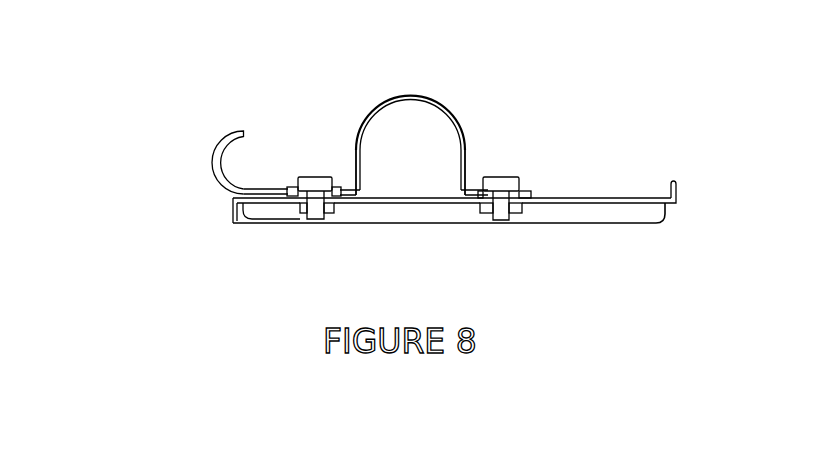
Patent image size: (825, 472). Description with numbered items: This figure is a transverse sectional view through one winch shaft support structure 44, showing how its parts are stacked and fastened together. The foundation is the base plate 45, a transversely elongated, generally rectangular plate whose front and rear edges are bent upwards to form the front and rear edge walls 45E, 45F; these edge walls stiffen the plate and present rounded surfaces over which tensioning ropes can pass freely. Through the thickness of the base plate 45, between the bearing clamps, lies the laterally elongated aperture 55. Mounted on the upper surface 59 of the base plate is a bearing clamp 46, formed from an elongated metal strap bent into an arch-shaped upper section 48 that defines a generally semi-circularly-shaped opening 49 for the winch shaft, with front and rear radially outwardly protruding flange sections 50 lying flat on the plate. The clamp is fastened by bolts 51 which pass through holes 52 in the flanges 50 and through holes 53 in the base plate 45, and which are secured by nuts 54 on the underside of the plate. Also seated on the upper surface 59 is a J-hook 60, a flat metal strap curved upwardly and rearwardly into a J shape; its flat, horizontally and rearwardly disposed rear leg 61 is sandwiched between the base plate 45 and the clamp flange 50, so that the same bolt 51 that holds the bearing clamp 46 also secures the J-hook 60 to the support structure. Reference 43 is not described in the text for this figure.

The dome-shaped housing 43 is at (450, 106).
The arch-shaped upper section 48 is at (476, 116).
The winch shaft support structure 44 is at (327, 62).
The base plate 45 is at (597, 228).
The front edge wall 45E is at (229, 217).
The rear edge wall 45F is at (684, 180).
The bearing clamp 46 is at (397, 96).
The semi-circularly-shaped opening 49 is at (410, 149).
The flange section 50 is at (345, 186).
The bolt 51 is at (300, 176).
The hole 52 is at (298, 182).
The hole 53 is at (302, 209).
The nut 54 is at (338, 211).
The aperture 55 is at (482, 214).
The upper surface 59 is at (613, 197).
The J-hook 60 is at (215, 143).
The rear leg 61 is at (363, 195).